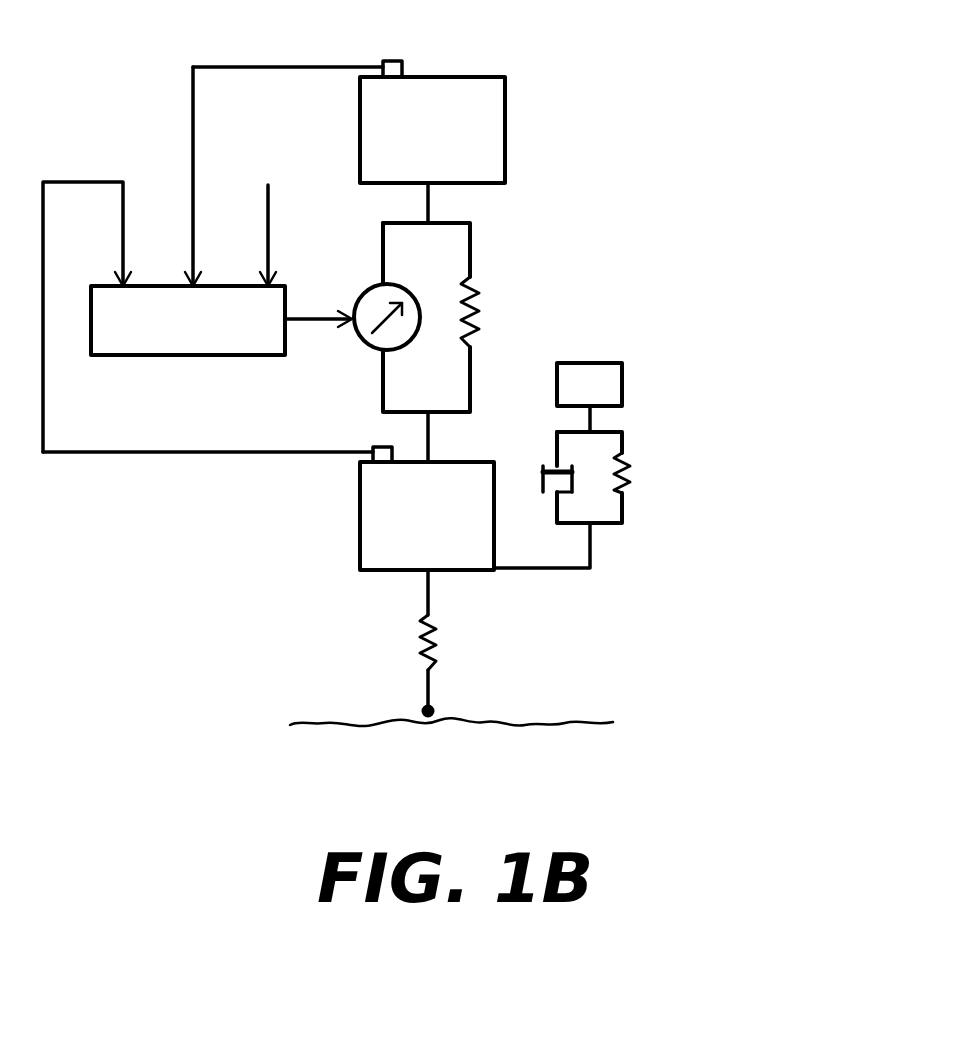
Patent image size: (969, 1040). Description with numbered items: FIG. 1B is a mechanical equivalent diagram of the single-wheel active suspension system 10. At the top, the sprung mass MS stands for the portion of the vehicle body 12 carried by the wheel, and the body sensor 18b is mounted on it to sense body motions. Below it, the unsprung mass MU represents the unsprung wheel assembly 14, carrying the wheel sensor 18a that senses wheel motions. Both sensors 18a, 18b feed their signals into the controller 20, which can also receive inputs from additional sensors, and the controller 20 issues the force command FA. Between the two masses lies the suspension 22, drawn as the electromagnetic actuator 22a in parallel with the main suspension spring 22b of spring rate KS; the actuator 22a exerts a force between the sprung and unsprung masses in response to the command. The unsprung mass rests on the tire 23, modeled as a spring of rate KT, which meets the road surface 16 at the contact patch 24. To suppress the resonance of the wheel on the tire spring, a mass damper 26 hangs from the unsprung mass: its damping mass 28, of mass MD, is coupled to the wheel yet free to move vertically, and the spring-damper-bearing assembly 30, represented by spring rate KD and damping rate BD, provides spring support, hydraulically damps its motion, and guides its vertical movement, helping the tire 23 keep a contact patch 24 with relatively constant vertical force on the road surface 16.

The active suspension system 10 is at (702, 165).
The body 12 is at (505, 106).
The unsprung wheel assembly 14 is at (360, 512).
The road surface 16 is at (613, 722).
The wheel sensor 18a is at (383, 447).
The body sensor 18b is at (395, 60).
The controller 20 is at (153, 355).
The suspension 22 is at (485, 322).
The electromagnetic actuator 22a is at (410, 285).
The main suspension spring 22b is at (501, 302).
The tire 23 is at (421, 650).
The contact patch 24 is at (428, 717).
The mass damper 26 is at (655, 463).
The damping mass 28 is at (622, 378).
The spring-damper-bearing assembly 30 is at (615, 477).